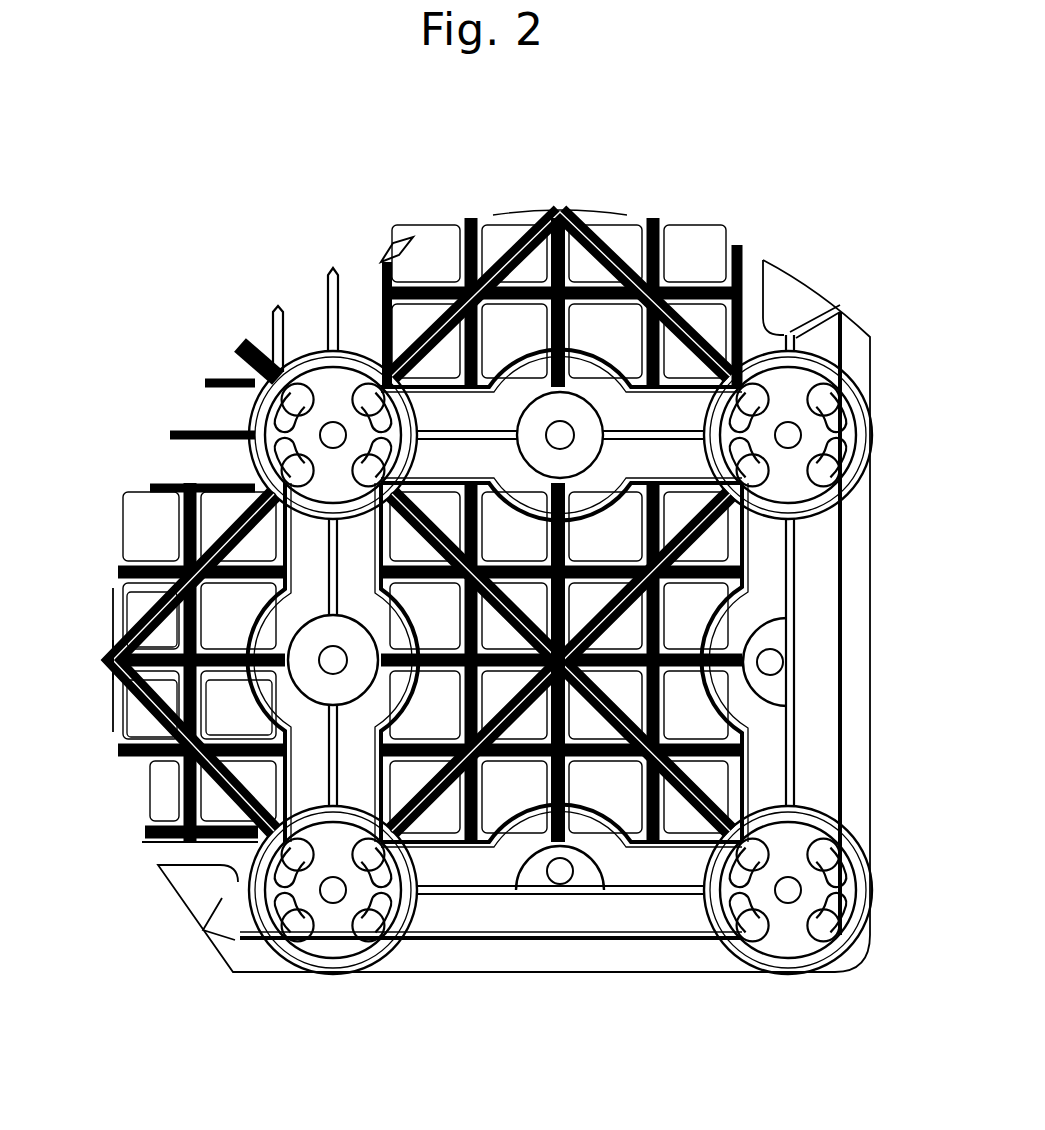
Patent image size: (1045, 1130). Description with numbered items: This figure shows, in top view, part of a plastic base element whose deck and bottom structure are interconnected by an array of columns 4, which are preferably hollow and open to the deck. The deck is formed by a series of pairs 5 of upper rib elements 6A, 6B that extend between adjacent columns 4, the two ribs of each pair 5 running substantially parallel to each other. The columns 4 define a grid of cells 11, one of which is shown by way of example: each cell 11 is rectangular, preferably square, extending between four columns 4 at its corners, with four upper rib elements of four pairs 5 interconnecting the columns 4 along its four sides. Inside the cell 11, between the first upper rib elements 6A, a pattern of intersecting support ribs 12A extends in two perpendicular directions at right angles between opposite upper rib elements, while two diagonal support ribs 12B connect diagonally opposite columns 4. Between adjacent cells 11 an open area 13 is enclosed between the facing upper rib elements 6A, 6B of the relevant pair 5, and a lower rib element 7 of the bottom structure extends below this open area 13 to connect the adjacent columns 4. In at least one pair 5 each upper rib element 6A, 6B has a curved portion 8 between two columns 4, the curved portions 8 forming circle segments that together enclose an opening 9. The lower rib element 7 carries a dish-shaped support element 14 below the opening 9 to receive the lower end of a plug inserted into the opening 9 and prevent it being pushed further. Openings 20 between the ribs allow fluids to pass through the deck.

The column 4 is at (285, 432).
The pair of upper rib elements 5 is at (298, 287).
The first upper rib element 6A is at (275, 322).
The second upper rib element 6B is at (378, 258).
The lower rib element 7 is at (333, 272).
The curved portion 8 is at (243, 707).
The opening 9 is at (390, 670).
The cell 11 is at (668, 258).
The intersecting support rib 12A is at (150, 567).
The diagonal support rib 12B is at (225, 625).
The open area 13 is at (307, 540).
The support element 14 is at (578, 415).
The opening between ribs 20 is at (112, 658).